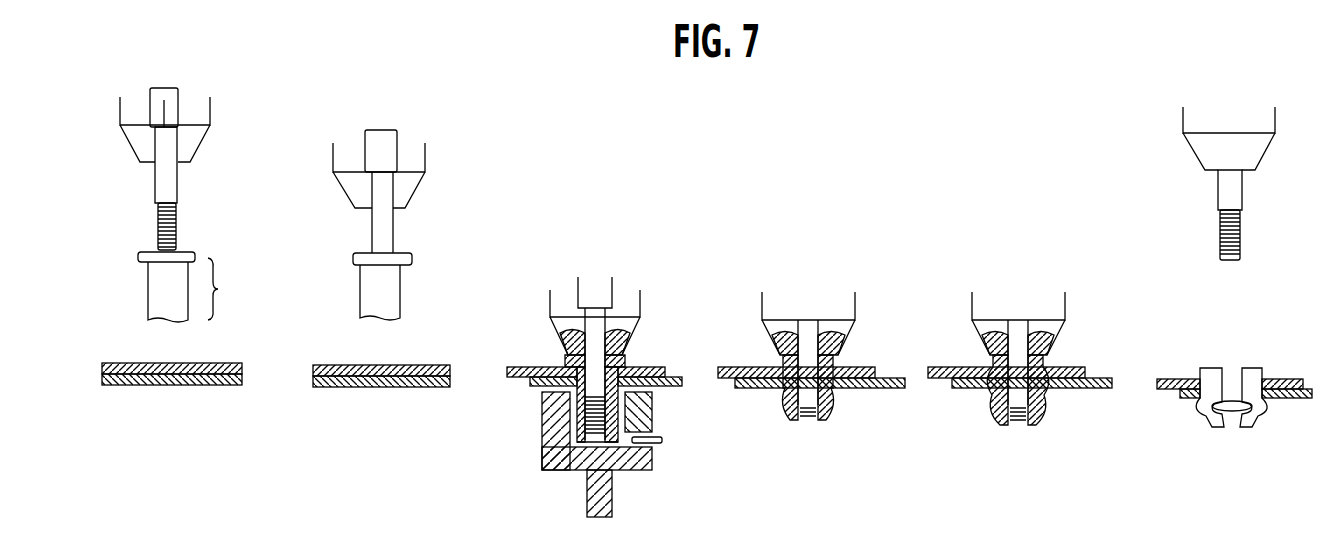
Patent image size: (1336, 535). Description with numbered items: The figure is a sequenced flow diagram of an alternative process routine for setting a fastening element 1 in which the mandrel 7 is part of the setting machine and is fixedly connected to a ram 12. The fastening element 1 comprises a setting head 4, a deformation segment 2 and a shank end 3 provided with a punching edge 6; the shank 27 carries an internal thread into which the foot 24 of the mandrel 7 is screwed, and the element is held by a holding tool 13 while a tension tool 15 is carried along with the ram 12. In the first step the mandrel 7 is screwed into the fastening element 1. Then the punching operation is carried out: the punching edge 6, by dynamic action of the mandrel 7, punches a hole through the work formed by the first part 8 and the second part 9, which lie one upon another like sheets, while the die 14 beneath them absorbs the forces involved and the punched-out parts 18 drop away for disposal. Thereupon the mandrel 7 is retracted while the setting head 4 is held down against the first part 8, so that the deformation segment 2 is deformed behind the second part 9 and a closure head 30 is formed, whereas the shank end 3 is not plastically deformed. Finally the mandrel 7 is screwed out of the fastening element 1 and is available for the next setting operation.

The fastening element 1 is at (163, 278).
The deformation segment 2 is at (835, 405).
The shank end 3 is at (150, 298).
The setting head 4 is at (195, 258).
The punching edge 6 is at (135, 329).
The mandrel 7 is at (163, 187).
The first part 8 is at (104, 368).
The second part 9 is at (104, 380).
The ram 12 is at (158, 106).
The holding tool 13 is at (138, 137).
The die 14 is at (560, 450).
The tension tool 15 is at (170, 116).
The punched-out parts 18 is at (655, 447).
The foot 24 is at (160, 222).
The shank 27 is at (227, 289).
The closure head 30 is at (1048, 400).